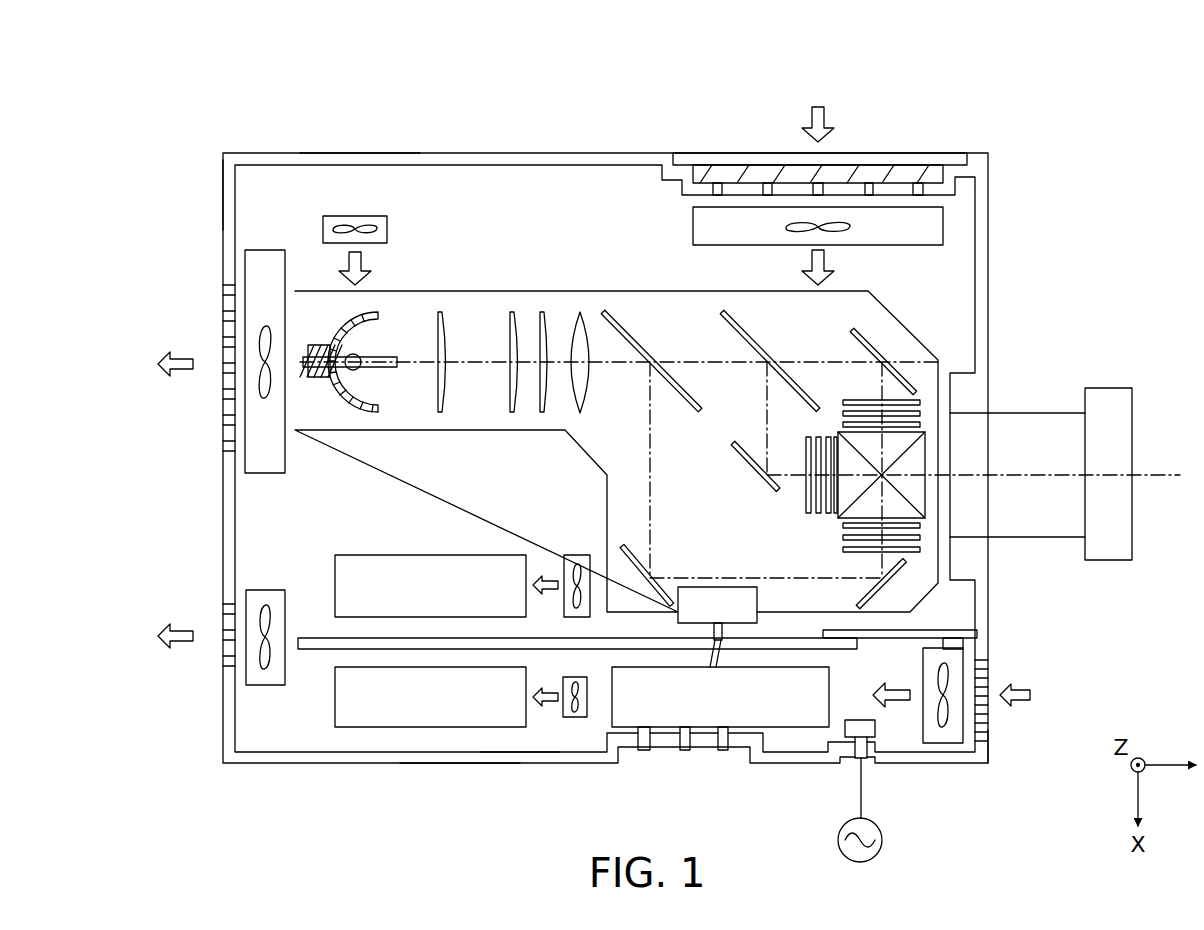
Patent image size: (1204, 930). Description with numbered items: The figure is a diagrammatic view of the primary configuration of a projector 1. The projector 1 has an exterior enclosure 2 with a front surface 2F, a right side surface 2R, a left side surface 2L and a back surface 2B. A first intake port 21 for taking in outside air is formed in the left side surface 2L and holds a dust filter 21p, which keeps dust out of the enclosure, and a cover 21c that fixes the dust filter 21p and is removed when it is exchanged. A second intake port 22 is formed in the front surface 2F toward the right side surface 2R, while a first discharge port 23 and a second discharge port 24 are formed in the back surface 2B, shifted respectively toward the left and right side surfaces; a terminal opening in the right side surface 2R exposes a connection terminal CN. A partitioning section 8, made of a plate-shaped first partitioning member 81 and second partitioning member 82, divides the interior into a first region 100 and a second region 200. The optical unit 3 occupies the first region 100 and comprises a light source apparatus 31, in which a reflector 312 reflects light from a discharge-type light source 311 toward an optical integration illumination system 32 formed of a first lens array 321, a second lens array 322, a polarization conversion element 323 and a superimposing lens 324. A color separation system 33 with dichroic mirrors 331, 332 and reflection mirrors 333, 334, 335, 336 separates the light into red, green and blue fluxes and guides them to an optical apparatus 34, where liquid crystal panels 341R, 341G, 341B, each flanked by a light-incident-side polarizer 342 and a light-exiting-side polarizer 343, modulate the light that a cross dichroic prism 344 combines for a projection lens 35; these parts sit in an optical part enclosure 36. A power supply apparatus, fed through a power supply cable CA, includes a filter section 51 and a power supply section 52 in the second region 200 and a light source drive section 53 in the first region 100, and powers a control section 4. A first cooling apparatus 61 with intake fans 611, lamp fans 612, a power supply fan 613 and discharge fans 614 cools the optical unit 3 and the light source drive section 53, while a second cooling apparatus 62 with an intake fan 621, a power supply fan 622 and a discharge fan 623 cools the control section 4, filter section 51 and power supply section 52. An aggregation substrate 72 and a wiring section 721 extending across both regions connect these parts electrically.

The projector 1 is at (1093, 126).
The exterior enclosure 2 is at (493, 153).
The left side surface 2L is at (357, 153).
The back surface 2B is at (222, 185).
The right side surface 2R is at (460, 763).
The front surface 2F is at (990, 753).
The first region 100 is at (586, 178).
The second region 200 is at (522, 745).
The first intake port 21 is at (820, 146).
The cover 21c is at (703, 160).
The dust filter 21p is at (760, 175).
The second intake port 22 is at (992, 738).
The first discharge port 23 is at (214, 404).
The second discharge port 24 is at (214, 672).
The optical unit 3 is at (738, 408).
The light source apparatus 31 is at (369, 397).
The light source 311 is at (358, 373).
The reflector 312 is at (351, 404).
The optical integration illumination system 32 is at (516, 308).
The first lens array 321 is at (443, 308).
The second lens array 322 is at (513, 308).
The polarization conversion element 323 is at (545, 308).
The superimposing lens 324 is at (590, 329).
The color separation system 33 is at (767, 433).
The dichroic mirror 331 is at (641, 341).
The dichroic mirror 332 is at (761, 341).
The reflection mirror 333 is at (641, 562).
The reflection mirror 334 is at (860, 592).
The reflection mirror 335 is at (756, 470).
The reflection mirror 336 is at (881, 341).
The optical apparatus 34 is at (869, 461).
The liquid crystal panel for B light 341B is at (921, 412).
The liquid crystal panel for G light 341G is at (819, 512).
The liquid crystal panel for R light 341R is at (921, 536).
The light-incident-side polarizer 342 is at (921, 402).
The light-exiting-side polarizer 343 is at (816, 435).
The cross dichroic prism 344 is at (916, 458).
The projection lens 35 is at (1082, 448).
The optical part enclosure 36 is at (466, 431).
The control section 4 is at (620, 724).
The filter section 51 is at (872, 729).
The power supply section 52 is at (376, 727).
The light source drive section 53 is at (376, 556).
The first cooling apparatus 61 is at (655, 394).
The intake fan 611 is at (696, 219).
The lamp fan 612 is at (357, 226).
The power supply fan 613 is at (577, 555).
The discharge fan 614 is at (266, 255).
The second cooling apparatus 62 is at (621, 682).
The intake fan 621 is at (924, 662).
The power supply fan 622 is at (574, 720).
The discharge fan 623 is at (266, 590).
The aggregation substrate 72 is at (743, 619).
The wiring section 721 is at (707, 634).
The partitioning section 8 is at (723, 622).
The first partitioning member 81 is at (802, 643).
The second partitioning member 82 is at (945, 644).
The connection terminal CN is at (684, 752).
The power supply cable CA is at (858, 782).